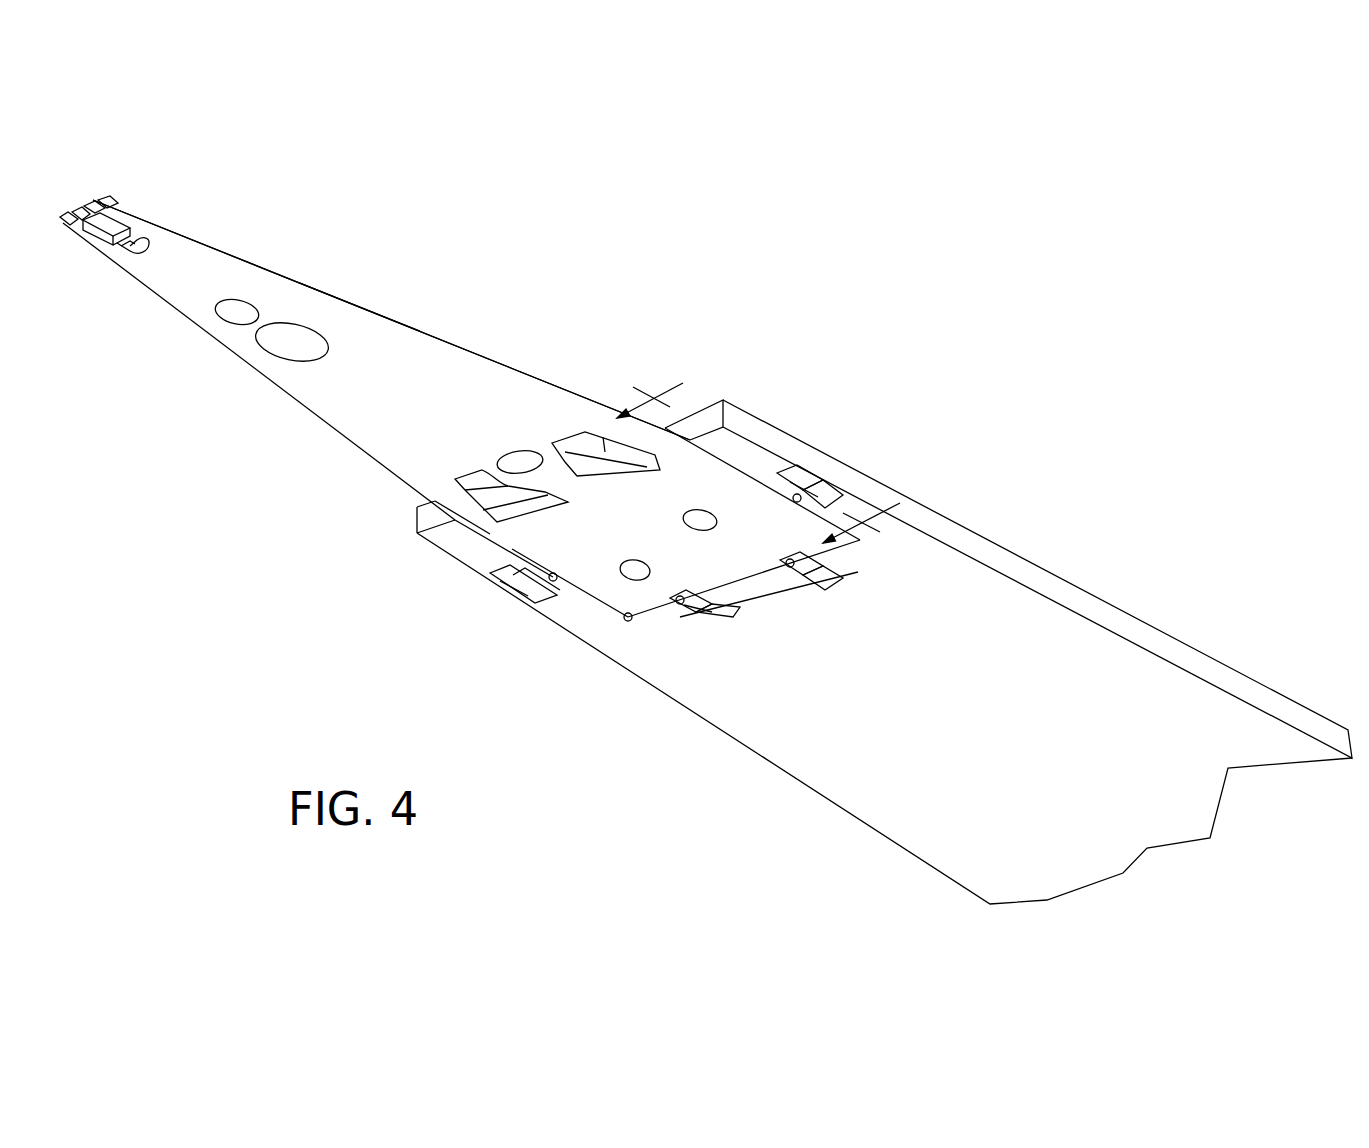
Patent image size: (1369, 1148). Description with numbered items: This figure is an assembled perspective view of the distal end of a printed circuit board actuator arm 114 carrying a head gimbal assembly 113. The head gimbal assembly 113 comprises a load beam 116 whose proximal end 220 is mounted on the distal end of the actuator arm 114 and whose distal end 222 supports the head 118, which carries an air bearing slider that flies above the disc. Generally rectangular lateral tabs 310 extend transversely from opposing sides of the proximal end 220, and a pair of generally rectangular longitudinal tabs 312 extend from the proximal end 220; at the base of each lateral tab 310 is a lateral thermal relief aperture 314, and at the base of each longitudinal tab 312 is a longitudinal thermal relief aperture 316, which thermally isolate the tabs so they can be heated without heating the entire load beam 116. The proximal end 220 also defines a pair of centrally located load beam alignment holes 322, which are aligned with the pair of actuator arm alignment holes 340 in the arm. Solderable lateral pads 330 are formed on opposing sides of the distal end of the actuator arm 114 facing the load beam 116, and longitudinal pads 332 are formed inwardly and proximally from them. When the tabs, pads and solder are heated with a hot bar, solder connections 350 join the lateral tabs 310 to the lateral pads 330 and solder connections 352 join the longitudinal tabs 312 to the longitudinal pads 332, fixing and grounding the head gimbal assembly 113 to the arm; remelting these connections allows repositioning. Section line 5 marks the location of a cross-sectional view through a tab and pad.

The head gimbal assembly 113 is at (585, 290).
The printed circuit board actuator arm 114 is at (940, 745).
The load beam 116 is at (455, 320).
The head 118 is at (125, 222).
The distal end of the load beam 222 is at (182, 293).
The proximal end of the load beam 220 is at (717, 497).
The section line 5 is at (758, 455).
The lateral tab 310 is at (815, 497).
The longitudinal tab 312 is at (697, 608).
The lateral thermal relief aperture 314 is at (797, 494).
The longitudinal thermal relief aperture 316 is at (808, 586).
The load beam alignment hole 322 is at (695, 516).
The lateral pad 330 is at (848, 493).
The longitudinal pad 332 is at (738, 608).
The actuator arm alignment hole 340 is at (636, 570).
The solder connection 350 is at (810, 480).
The solder connection 352 is at (713, 618).